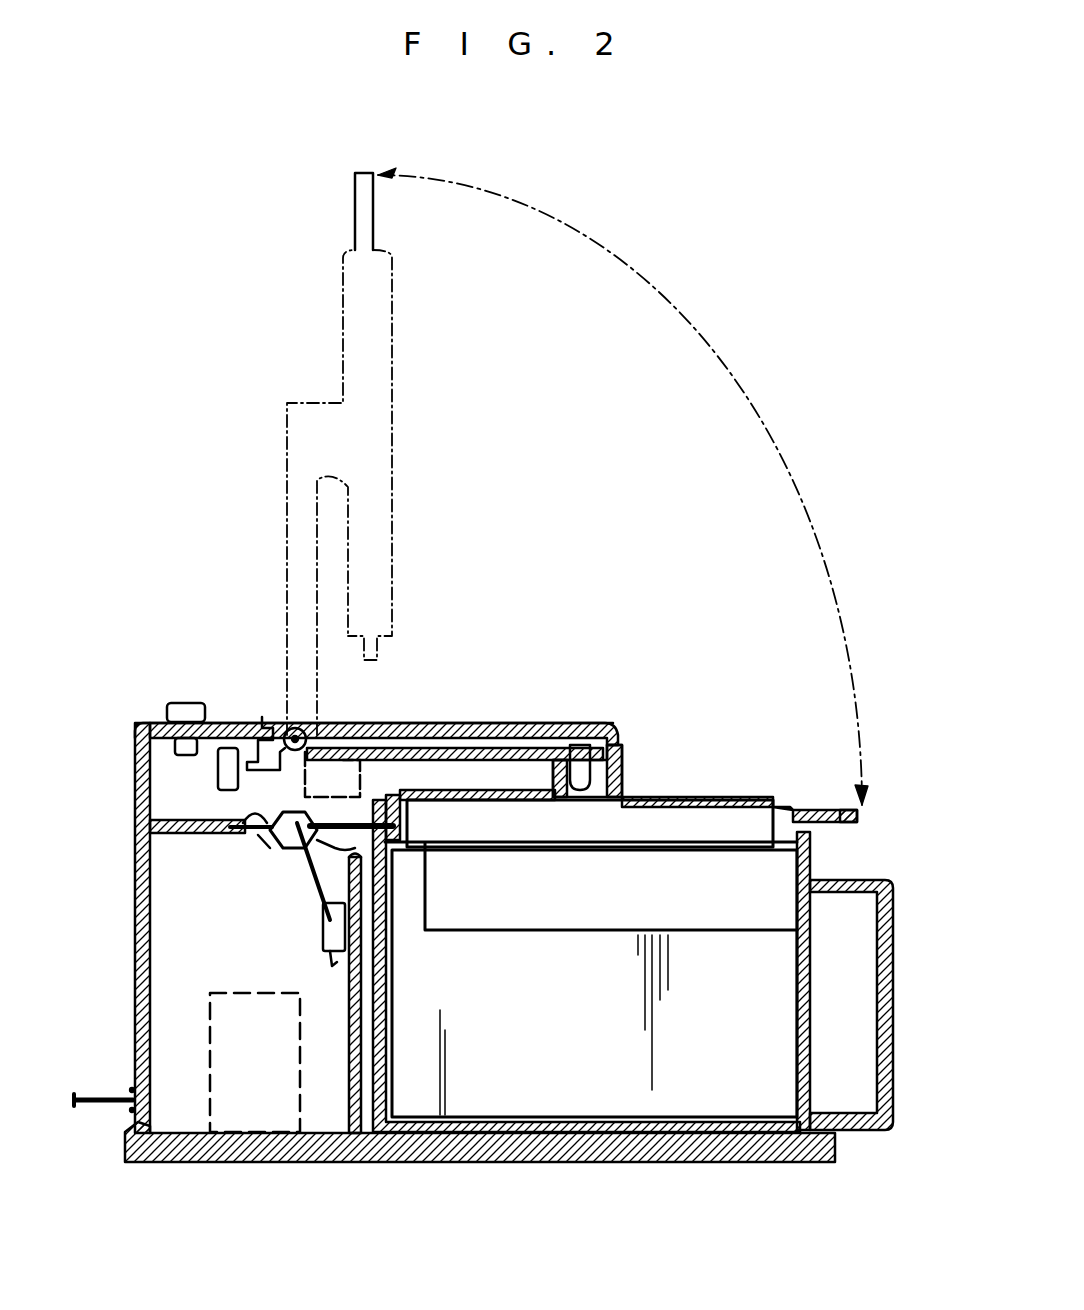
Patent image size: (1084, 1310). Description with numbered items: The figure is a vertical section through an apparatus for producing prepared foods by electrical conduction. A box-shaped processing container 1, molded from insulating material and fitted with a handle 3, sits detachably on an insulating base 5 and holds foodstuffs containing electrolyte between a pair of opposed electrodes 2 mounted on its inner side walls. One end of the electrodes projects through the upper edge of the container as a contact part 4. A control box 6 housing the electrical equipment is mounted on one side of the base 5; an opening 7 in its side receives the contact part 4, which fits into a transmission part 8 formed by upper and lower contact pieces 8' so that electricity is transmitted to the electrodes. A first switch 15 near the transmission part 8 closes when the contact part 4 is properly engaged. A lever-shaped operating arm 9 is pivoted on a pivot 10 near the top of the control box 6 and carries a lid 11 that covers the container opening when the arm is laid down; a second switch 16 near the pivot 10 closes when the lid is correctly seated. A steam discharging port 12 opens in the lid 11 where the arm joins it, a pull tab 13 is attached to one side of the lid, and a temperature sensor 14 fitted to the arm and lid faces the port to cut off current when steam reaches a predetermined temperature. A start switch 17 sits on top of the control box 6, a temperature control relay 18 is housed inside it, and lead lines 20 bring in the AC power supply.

The processing container for electrical conduction 1 is at (812, 848).
The electrodes 2 is at (690, 930).
The handle 3 is at (893, 968).
The contact part 4 is at (360, 805).
The base 5 is at (515, 1164).
The control box 6 is at (134, 896).
The opening 7 is at (386, 862).
The transmission part 8 is at (311, 870).
The contact pieces 8' is at (260, 834).
The operating arm 9 is at (528, 724).
The pivot 10 is at (290, 730).
The lid 11 is at (720, 796).
The steam discharging port 12 is at (612, 785).
The pull tab 13 is at (858, 812).
The temperature sensor 14 is at (580, 792).
The first switch 15 is at (323, 942).
The second switch 16 is at (218, 768).
The start switch 17 is at (185, 703).
The temperature control relay 18 is at (218, 1032).
The lead lines 20 is at (92, 1098).